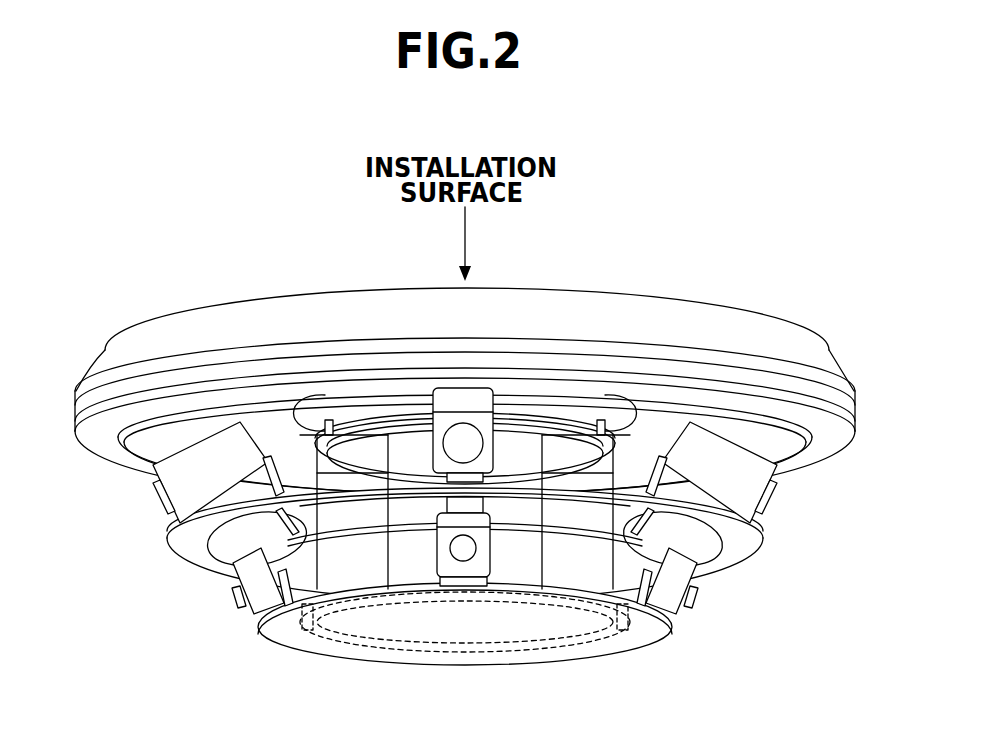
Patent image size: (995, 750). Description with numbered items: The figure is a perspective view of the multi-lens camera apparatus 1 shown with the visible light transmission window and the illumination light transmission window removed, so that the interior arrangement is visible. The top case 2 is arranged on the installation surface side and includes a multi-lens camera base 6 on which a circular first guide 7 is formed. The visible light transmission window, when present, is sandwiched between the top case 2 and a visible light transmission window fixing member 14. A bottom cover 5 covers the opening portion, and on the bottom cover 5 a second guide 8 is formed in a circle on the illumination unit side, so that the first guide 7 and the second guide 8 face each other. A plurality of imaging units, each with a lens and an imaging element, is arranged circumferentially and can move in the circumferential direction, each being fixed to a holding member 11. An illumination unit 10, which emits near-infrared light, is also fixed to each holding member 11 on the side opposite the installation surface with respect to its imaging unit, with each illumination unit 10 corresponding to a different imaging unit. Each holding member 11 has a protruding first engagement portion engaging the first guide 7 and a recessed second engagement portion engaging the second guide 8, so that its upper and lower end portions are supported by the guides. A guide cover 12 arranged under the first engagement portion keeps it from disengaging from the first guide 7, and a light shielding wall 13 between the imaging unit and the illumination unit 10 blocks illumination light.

The multi-lens camera apparatus 1 is at (88, 316).
The top case 2 is at (757, 330).
The bottom cover 5 is at (474, 632).
The multi-lens camera base 6 is at (668, 394).
The first guide 7 is at (365, 397).
The second guide 8 is at (343, 636).
The illumination unit 10 is at (253, 587).
The holding member 11 is at (300, 604).
The guide cover 12 is at (590, 418).
The light shielding wall 13 is at (733, 553).
The visible light transmission window fixing member 14 is at (826, 447).